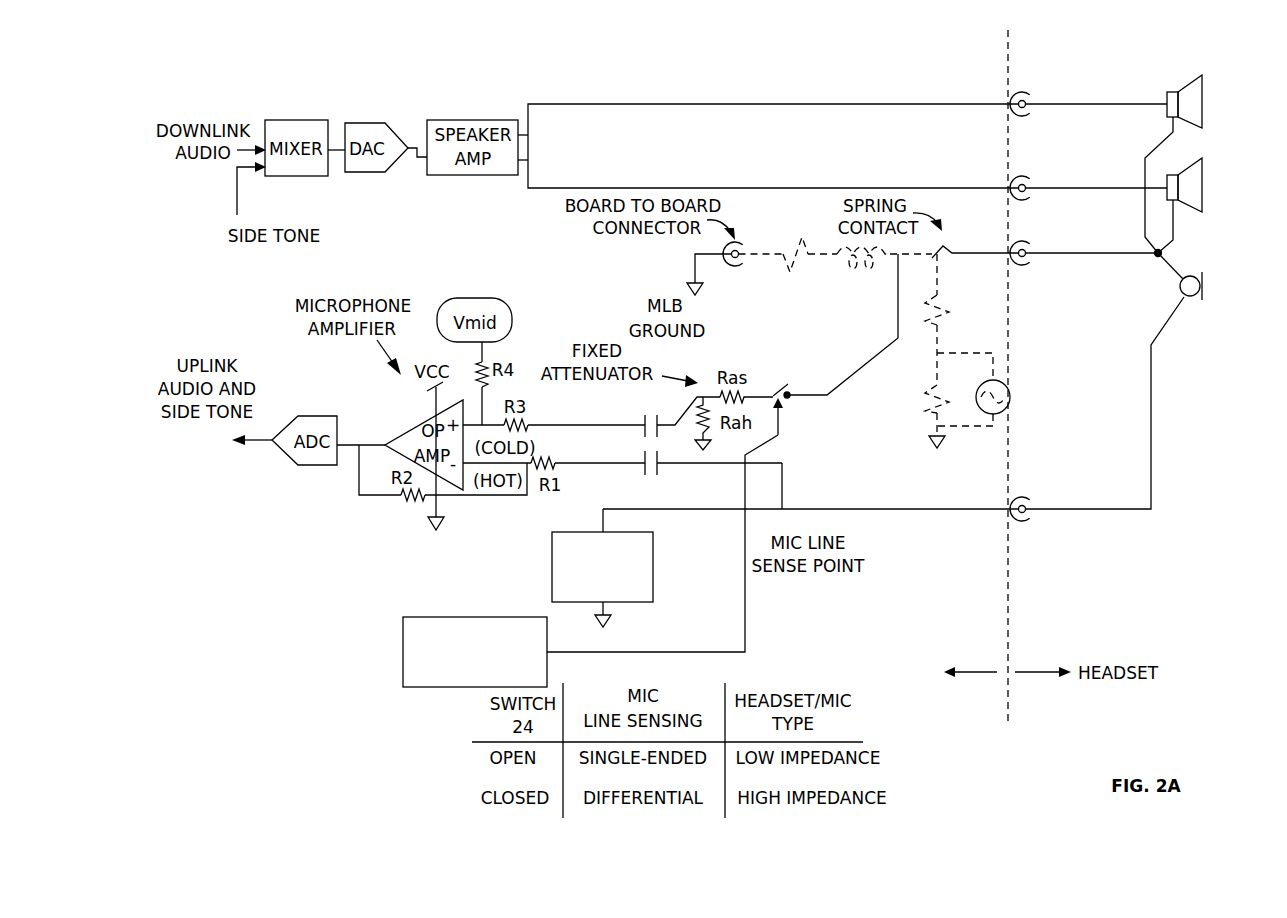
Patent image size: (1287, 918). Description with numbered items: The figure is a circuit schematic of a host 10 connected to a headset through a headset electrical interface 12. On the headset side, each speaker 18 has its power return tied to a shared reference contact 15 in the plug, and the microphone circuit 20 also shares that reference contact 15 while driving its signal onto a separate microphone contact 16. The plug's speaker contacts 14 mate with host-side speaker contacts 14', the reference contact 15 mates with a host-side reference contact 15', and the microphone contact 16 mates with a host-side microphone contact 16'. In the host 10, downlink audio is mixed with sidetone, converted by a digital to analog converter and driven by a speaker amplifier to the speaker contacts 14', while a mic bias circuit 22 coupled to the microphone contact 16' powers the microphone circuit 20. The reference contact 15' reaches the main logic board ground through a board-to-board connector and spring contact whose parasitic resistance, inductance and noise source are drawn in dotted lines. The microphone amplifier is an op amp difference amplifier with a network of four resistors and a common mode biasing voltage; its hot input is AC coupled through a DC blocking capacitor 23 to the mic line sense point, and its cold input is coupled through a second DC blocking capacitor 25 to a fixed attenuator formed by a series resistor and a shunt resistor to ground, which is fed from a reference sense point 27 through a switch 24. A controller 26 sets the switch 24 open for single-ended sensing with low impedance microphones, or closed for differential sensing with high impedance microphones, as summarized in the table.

The host 10 is at (936, 684).
The headset electrical interface 12 is at (1033, 52).
The speaker contacts 14 is at (1093, 146).
The host-side speaker contacts 14' is at (994, 146).
The reference contact 15 is at (1089, 236).
The host-side reference contact 15' is at (994, 239).
The microphone contact 16 is at (893, 405).
The host-side microphone contact 16' is at (1001, 526).
The speaker 18 is at (1203, 168).
The microphone circuit 20 is at (1203, 276).
The mic bias circuit 22 is at (653, 568).
The DC blocking capacitor 23 is at (645, 450).
The switch 24 is at (790, 405).
The DC blocking capacitor 25 is at (644, 410).
The controller 26 is at (462, 672).
The reference sense point 27 is at (892, 280).